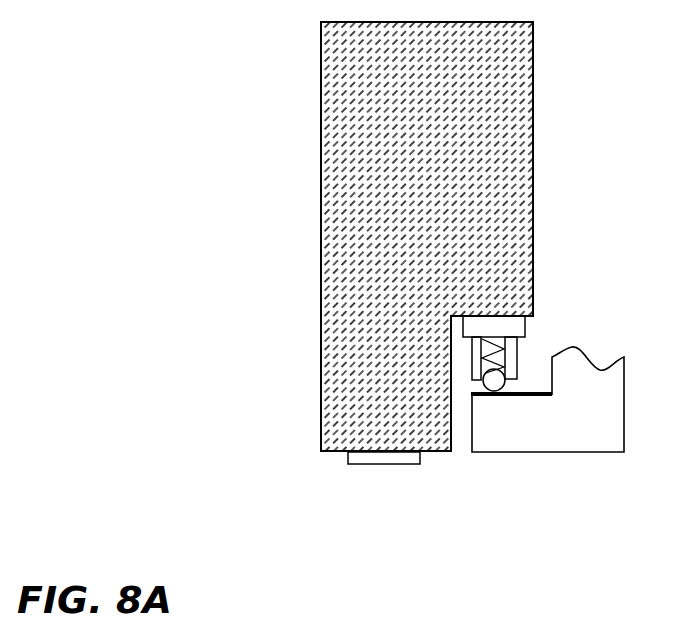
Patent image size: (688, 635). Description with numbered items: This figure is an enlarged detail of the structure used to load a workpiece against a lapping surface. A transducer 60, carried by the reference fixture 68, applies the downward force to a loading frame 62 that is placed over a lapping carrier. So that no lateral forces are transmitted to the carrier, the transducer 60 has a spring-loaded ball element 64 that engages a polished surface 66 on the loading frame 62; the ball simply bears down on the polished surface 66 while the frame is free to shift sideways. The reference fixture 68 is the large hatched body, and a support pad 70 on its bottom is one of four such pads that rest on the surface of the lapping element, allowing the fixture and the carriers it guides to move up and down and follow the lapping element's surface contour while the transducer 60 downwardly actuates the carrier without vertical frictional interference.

The transducer 60 is at (552, 272).
The loading frame 62 is at (553, 431).
The spring-loaded ball element 64 is at (476, 397).
The polished surface 66 is at (525, 393).
The reference fixture 68 is at (320, 256).
The support pad 70 is at (348, 462).